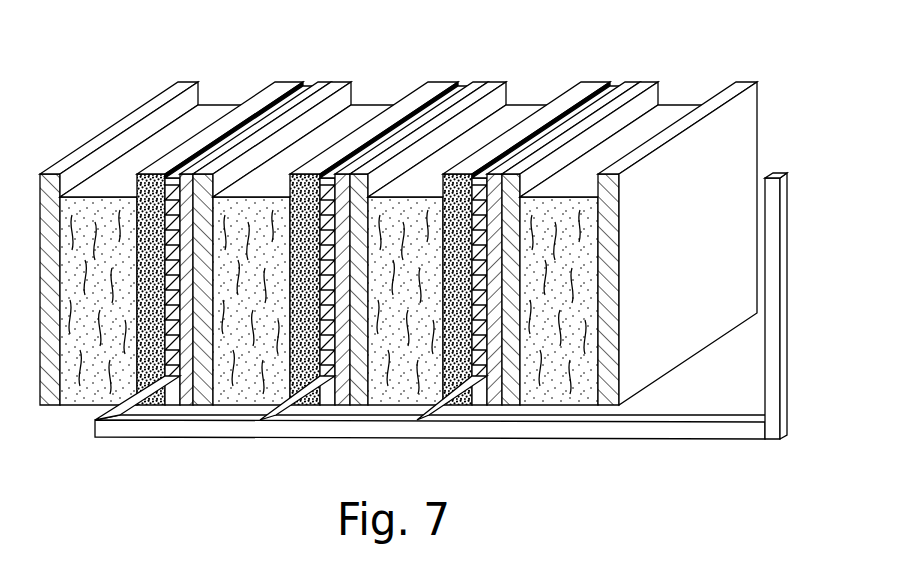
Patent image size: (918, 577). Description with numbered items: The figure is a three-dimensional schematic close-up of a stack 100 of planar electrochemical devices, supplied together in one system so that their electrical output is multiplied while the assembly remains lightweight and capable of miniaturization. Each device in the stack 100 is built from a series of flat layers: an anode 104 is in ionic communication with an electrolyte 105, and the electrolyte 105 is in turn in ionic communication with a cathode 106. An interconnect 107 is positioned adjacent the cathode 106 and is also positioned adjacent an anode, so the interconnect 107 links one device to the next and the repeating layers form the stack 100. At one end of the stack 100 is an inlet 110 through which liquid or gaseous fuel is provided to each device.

The stack 100 is at (402, 219).
The anode 104 is at (377, 107).
The electrolyte 105 is at (345, 82).
The cathode 106 is at (328, 82).
The interconnect 107 is at (283, 82).
The inlet 110 is at (778, 173).